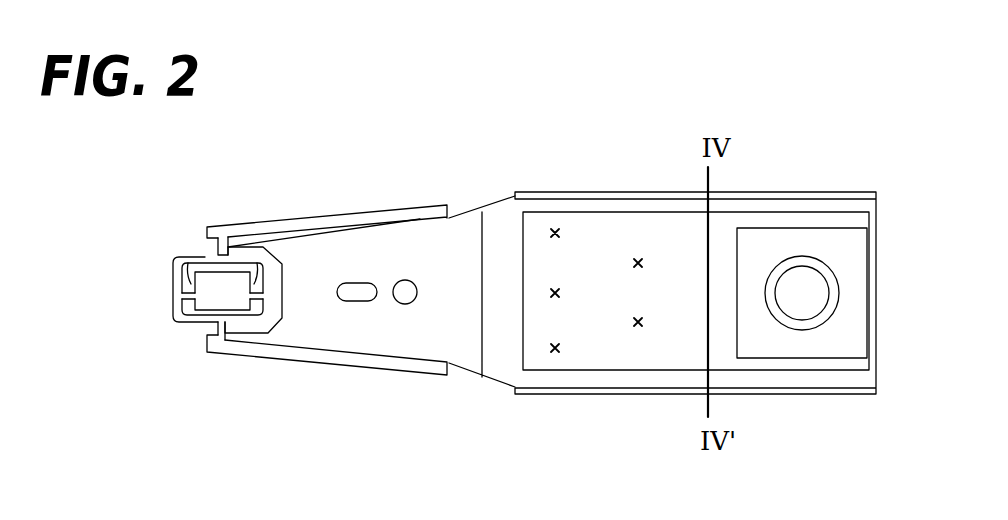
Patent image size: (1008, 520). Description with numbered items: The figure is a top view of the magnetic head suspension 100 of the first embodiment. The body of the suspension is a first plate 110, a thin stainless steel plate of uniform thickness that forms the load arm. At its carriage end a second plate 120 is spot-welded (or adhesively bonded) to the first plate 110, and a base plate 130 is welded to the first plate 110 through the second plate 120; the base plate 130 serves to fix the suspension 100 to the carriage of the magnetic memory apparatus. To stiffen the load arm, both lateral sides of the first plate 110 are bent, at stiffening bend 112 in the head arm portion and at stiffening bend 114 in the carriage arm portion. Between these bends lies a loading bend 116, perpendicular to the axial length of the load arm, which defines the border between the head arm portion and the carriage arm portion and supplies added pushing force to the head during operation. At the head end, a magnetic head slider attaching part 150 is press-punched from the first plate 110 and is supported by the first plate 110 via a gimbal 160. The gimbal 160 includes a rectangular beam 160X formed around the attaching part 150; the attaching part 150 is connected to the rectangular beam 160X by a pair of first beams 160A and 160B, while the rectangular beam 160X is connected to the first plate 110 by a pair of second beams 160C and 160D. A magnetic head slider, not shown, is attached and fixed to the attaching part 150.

The magnetic head suspension 100 is at (380, 155).
The first plate 110 is at (388, 339).
The stiffening bend 112 is at (421, 209).
The stiffening bend 114 is at (608, 192).
The loading bend 116 is at (478, 342).
The second plate 120 is at (572, 343).
The base plate 130 is at (843, 257).
The magnetic head slider attaching part 150 is at (216, 283).
The gimbal 160 is at (140, 335).
The first beam 160A is at (184, 263).
The first beam 160B is at (268, 251).
The second beam 160C is at (216, 254).
The second beam 160D is at (210, 327).
The rectangular beam 160X is at (179, 295).